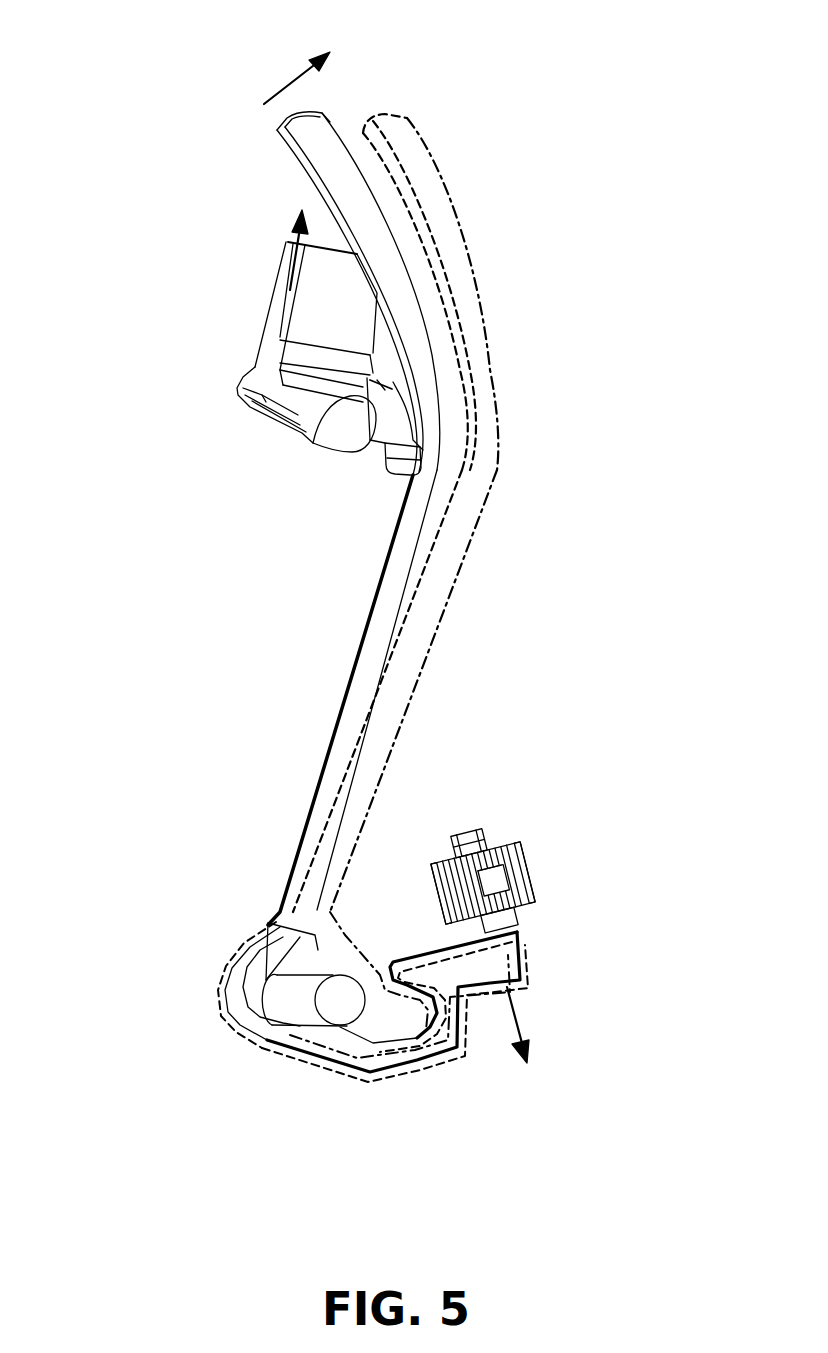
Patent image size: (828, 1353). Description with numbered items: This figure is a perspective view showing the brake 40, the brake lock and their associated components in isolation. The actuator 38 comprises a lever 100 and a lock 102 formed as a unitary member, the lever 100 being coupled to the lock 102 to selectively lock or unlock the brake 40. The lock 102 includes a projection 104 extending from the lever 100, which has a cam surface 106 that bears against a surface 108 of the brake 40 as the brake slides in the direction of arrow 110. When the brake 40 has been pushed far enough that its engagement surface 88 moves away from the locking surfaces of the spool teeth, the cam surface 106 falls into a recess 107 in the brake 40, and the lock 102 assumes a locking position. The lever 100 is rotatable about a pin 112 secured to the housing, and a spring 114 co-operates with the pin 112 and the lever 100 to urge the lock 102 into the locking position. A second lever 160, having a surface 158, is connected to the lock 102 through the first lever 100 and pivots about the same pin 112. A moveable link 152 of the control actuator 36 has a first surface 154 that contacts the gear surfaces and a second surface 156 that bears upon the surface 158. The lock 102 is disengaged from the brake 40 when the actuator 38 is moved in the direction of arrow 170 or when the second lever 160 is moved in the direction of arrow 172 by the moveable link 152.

The control actuator 36 is at (493, 883).
The actuator 38 is at (320, 133).
The brake 40 is at (267, 313).
The engagement surface 88 is at (355, 432).
The lever 100 is at (385, 610).
The lock 102 is at (400, 470).
The projection 104 is at (396, 402).
The cam surface 106 is at (395, 388).
The recess 107 is at (345, 402).
The surface 108 is at (380, 367).
The arrow 110 is at (293, 263).
The pin 112 is at (300, 1003).
The spring 114 is at (273, 933).
The moveable link 152 is at (467, 843).
The first surface 154 is at (473, 843).
The second surface 156 is at (495, 922).
The surface 158 is at (420, 958).
The second lever 160 is at (403, 1053).
The arrow 170 is at (290, 87).
The arrow 172 is at (520, 1007).